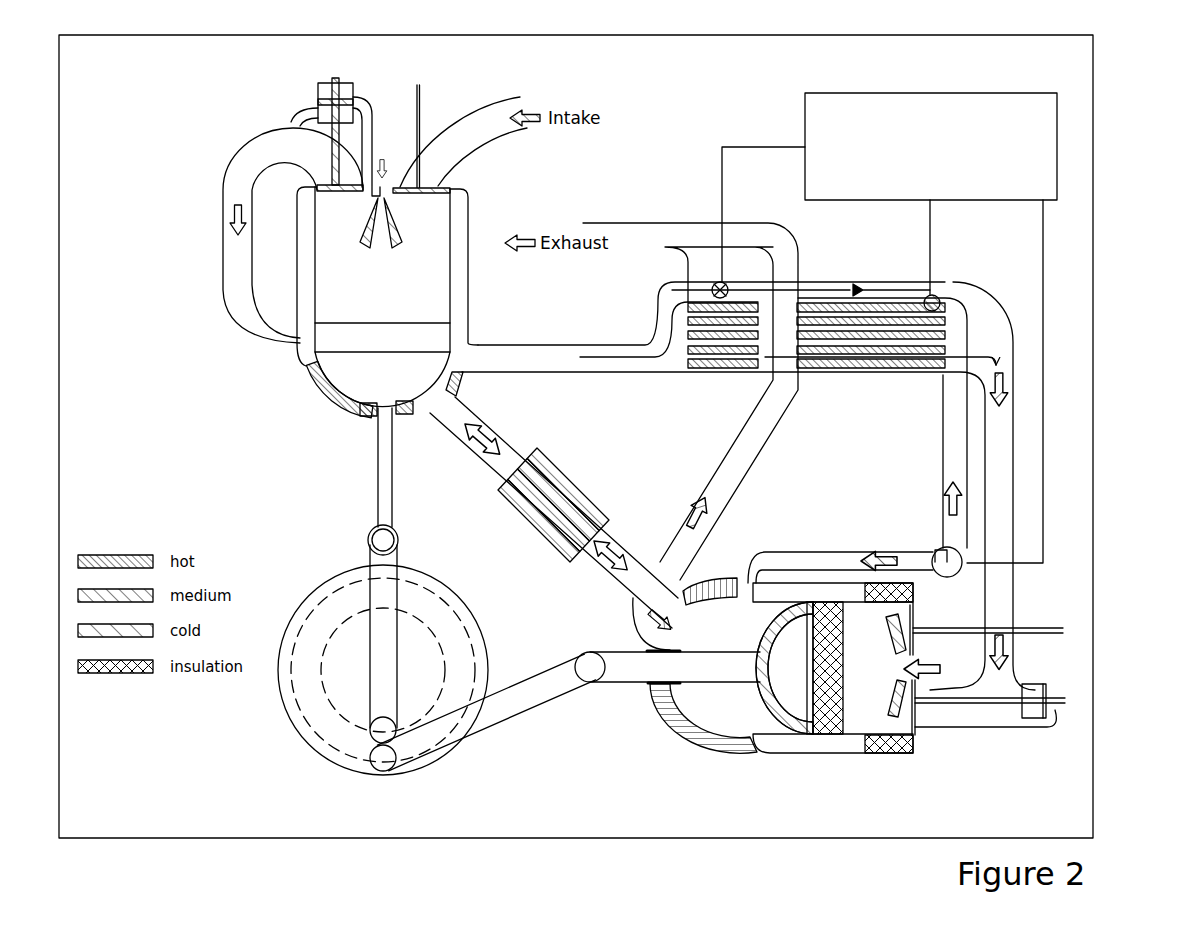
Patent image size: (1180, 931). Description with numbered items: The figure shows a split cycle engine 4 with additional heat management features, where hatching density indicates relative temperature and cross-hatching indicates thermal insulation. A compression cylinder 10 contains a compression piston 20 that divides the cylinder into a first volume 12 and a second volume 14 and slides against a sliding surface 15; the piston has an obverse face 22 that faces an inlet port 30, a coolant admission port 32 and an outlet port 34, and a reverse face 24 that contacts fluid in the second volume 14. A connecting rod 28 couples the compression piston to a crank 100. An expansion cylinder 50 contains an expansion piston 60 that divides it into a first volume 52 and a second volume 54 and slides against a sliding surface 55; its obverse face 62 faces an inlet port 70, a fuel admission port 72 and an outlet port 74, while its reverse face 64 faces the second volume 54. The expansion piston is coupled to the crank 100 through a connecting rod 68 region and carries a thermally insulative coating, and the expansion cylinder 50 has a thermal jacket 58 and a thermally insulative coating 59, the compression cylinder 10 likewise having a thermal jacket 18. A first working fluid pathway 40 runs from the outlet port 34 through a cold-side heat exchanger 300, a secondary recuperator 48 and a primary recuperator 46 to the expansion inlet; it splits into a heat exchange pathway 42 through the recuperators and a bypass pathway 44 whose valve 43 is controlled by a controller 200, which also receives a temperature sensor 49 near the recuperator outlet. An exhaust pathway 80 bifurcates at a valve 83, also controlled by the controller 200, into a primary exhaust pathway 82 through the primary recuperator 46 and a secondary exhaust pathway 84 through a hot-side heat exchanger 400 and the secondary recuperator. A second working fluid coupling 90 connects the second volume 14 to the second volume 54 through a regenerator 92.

The split cycle engine 4 is at (1097, 430).
The compression cylinder 10 is at (294, 250).
The first volume 12 is at (343, 242).
The second volume 14 is at (320, 390).
The sliding surface 15 is at (456, 328).
The thermal jacket 18 is at (310, 302).
The compression piston 20 is at (357, 372).
The obverse face 22 is at (327, 383).
The reverse face 24 is at (372, 410).
The connecting rod 28 is at (391, 618).
The inlet port 30 is at (468, 139).
The coolant admission port 32 is at (382, 157).
The outlet port 34 is at (325, 180).
The first working fluid pathway 40 is at (236, 183).
The heat exchange pathway 42 is at (982, 356).
The valve 43 is at (718, 280).
The bypass pathway 44 is at (846, 282).
The primary recuperator 46 is at (848, 369).
The secondary recuperator 48 is at (716, 368).
The temperature sensor 49 is at (947, 292).
The expansion cylinder 50 is at (847, 757).
The first volume 52 is at (904, 745).
The second volume 54 is at (692, 694).
The sliding surface 55 is at (820, 738).
The thermal jacket 58 is at (793, 746).
The thermally insulative coating 59 is at (911, 753).
The expansion piston 60 is at (728, 742).
The obverse face 62 is at (910, 733).
The reverse face 64 is at (752, 622).
The thermally insulative coating 68 is at (504, 690).
The inlet port 70 is at (925, 711).
The fuel admission port 72 is at (943, 669).
The outlet port 74 is at (922, 617).
The exhaust pathway 80 is at (918, 645).
The primary exhaust pathway 82 is at (942, 440).
The valve 83 is at (945, 547).
The secondary exhaust pathway 84 is at (833, 551).
The second working fluid coupling 90 is at (629, 528).
The regenerator 92 is at (569, 464).
The crank 100 is at (349, 762).
The controller 200 is at (889, 328).
The cold-side heat exchanger 300 is at (411, 418).
The hot-side heat exchanger 400 is at (656, 718).